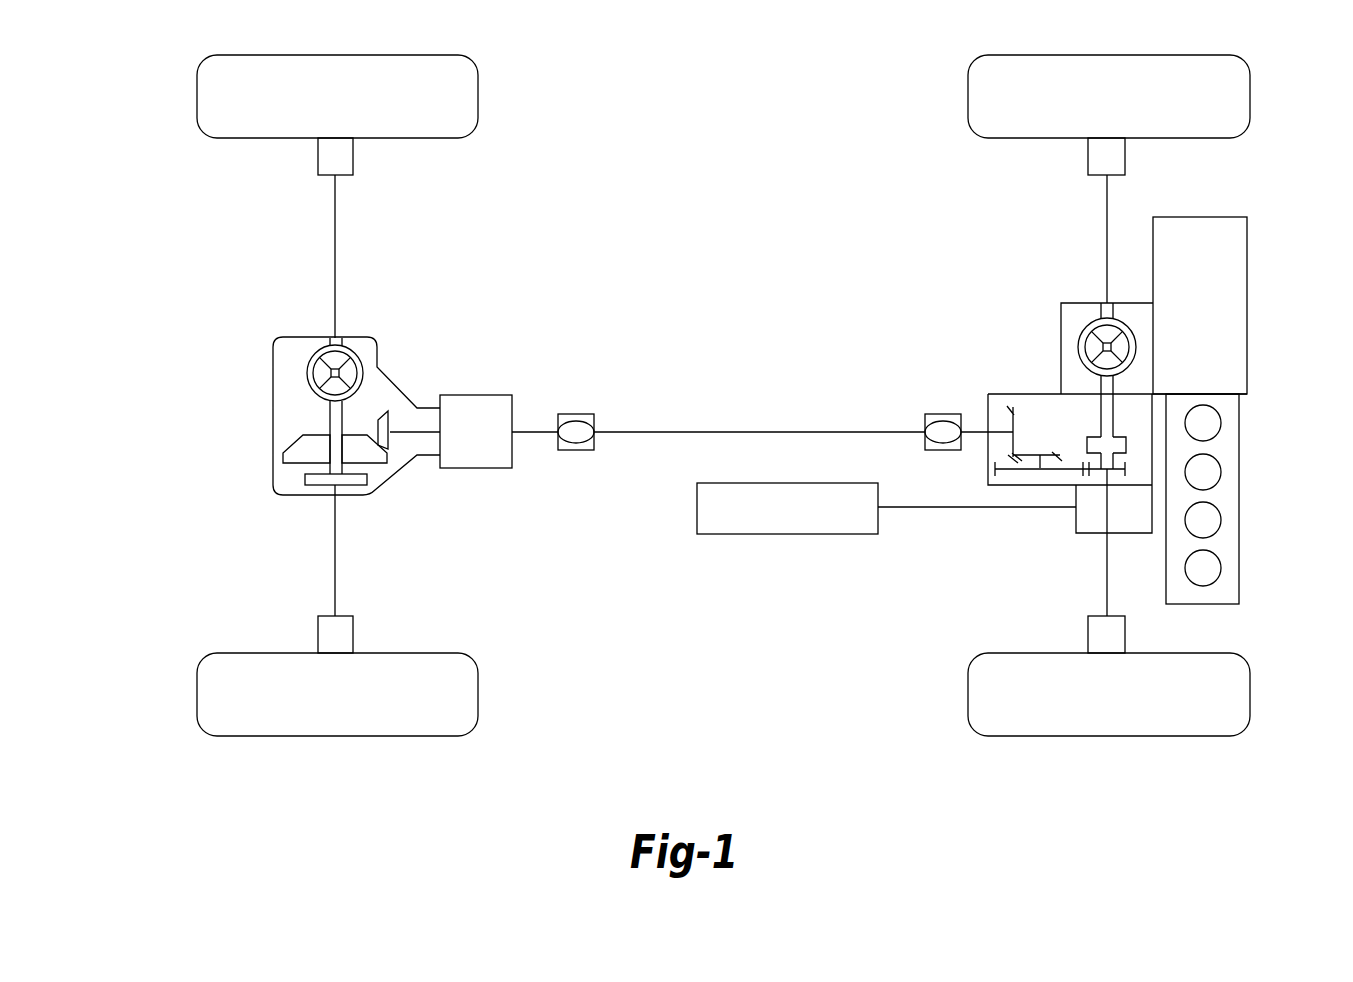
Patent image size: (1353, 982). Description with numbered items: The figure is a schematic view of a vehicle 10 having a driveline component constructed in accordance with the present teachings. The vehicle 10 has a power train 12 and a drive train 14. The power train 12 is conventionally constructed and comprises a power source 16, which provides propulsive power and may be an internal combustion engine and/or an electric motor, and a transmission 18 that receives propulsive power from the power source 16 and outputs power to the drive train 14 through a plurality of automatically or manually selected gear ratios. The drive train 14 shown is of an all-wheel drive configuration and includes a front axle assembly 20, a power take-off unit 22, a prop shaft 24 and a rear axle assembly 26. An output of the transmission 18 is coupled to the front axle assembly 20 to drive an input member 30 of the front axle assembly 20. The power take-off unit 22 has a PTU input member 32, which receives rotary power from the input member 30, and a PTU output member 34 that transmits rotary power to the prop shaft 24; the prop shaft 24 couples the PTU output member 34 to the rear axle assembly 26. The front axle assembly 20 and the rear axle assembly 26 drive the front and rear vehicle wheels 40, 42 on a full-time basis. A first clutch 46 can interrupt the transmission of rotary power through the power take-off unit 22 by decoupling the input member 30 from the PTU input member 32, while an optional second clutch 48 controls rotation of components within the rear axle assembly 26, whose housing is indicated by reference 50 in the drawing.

The vehicle 10 is at (138, 784).
The power train 12 is at (1268, 497).
The drive train 14 is at (750, 368).
The power source 16 is at (1233, 597).
The transmission 18 is at (1238, 234).
The front axle assembly 20 is at (1056, 286).
The power take-off unit 22 is at (997, 364).
The prop shaft 24 is at (645, 432).
The rear axle assembly 26 is at (242, 332).
The input member 30 is at (1136, 347).
The PTU input member 32 is at (1093, 472).
The PTU output member 34 is at (973, 432).
The front vehicle wheels 40 is at (968, 97).
The rear vehicle wheels 42 is at (197, 92).
The first clutch 46 is at (1126, 445).
The second clutch 48 is at (315, 485).
The rear drive module housing 50 is at (278, 418).